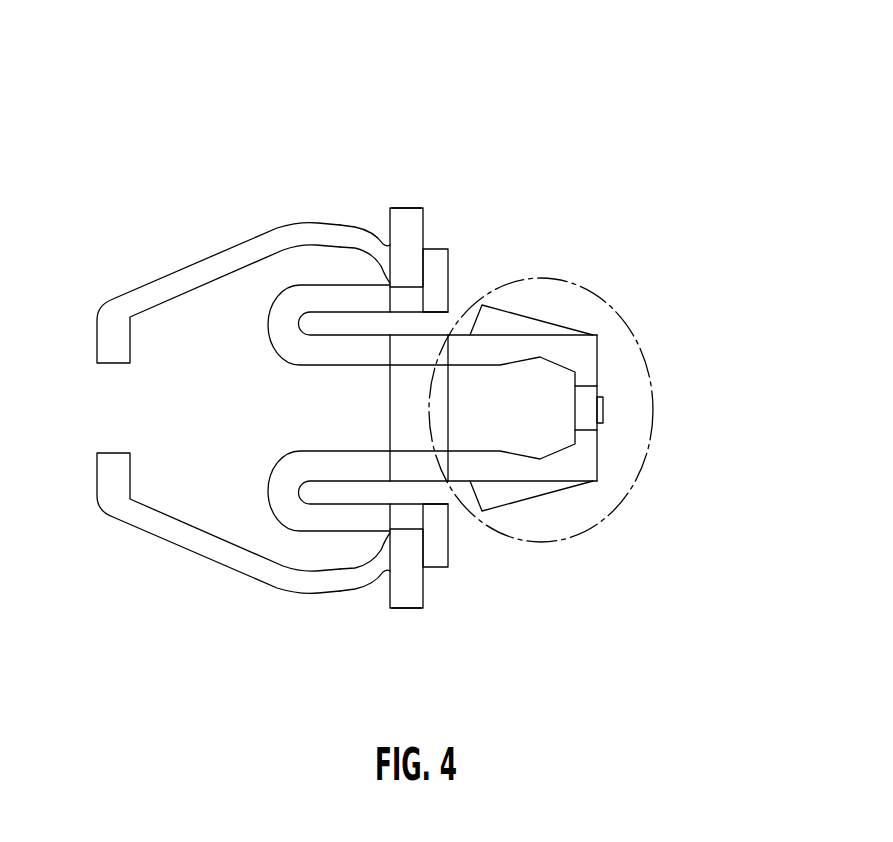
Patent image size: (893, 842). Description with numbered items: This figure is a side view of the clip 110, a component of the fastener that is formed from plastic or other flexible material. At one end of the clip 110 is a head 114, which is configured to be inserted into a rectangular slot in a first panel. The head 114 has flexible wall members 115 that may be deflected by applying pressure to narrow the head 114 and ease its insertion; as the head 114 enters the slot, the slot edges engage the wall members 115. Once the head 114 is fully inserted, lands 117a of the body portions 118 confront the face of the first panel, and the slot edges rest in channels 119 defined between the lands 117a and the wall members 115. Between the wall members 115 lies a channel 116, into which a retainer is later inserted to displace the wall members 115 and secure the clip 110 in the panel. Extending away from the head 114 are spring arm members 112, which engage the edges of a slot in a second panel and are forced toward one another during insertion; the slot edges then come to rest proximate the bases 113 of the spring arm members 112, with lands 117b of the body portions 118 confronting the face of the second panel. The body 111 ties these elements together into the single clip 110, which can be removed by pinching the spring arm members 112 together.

The clip 110 is at (644, 150).
The contact body 111 is at (321, 605).
The spring arm members 112 is at (180, 272).
The bases of the spring arm members 113 is at (366, 217).
The head 114 is at (557, 543).
The wall members 115 is at (524, 320).
The channel 116 is at (455, 410).
The lands 117a is at (449, 273).
The lands 117b is at (390, 226).
The body portions 118 is at (413, 208).
The channels 119 is at (458, 298).